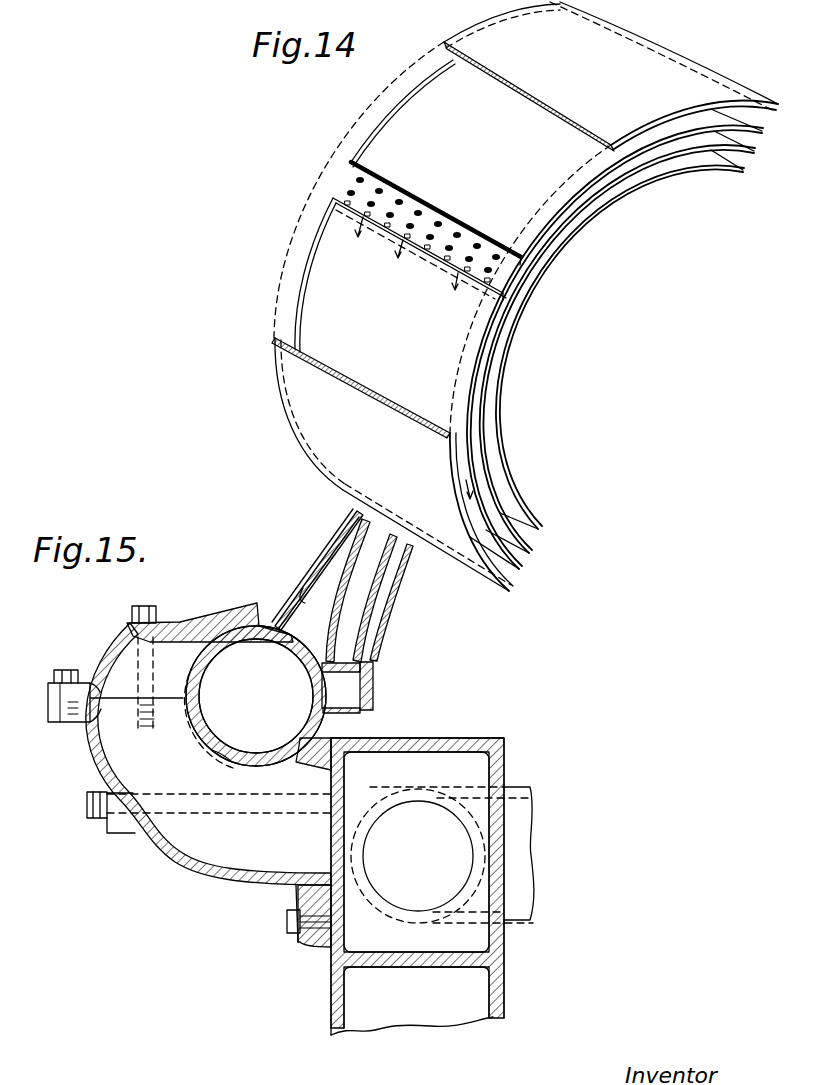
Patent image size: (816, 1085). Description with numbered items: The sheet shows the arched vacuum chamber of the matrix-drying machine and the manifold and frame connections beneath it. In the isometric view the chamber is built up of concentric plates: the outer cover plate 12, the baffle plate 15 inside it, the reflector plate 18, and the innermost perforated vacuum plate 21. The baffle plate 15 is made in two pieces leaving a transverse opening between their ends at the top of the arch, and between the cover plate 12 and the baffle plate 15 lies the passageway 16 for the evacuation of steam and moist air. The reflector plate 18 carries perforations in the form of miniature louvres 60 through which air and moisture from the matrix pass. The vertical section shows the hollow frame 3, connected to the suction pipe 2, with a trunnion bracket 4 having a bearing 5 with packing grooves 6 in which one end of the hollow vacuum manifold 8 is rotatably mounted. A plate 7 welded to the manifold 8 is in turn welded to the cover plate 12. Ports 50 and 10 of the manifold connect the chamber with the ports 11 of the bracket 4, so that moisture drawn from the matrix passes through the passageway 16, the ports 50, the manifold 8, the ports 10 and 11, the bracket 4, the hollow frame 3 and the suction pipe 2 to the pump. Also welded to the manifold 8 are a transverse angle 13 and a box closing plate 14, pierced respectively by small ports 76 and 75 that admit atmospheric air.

In FIG. 14, the cover plate 12 is at (473, 33).
In FIG. 15, the cover plate 12 is at (353, 527).
In FIG. 14, the baffle plate 15 is at (395, 115).
In FIG. 15, the baffle plate 15 is at (340, 605).
In FIG. 14, the passageway 16 is at (655, 133).
In FIG. 15, the passageway 16 is at (332, 583).
In FIG. 14, the reflector plate 18 is at (347, 192).
In FIG. 15, the reflector plate 18 is at (368, 600).
In FIG. 14, the perforated vacuum plate 21 is at (518, 337).
In FIG. 15, the perforated vacuum plate 21 is at (382, 632).
In FIG. 14, the miniature louvres 60 is at (482, 246).
In FIG. 15, the suction pipe 2 is at (522, 924).
In FIG. 15, the hollow frame 3 is at (422, 750).
In FIG. 15, the trunnion bracket 4 is at (152, 849).
In FIG. 15, the bearing 5 is at (268, 770).
In FIG. 15, the packing groove 6 is at (231, 765).
In FIG. 15, the plate 7 is at (305, 584).
In FIG. 15, the hollow vacuum manifold 8 is at (230, 750).
In FIG. 15, the port 10 is at (200, 667).
In FIG. 15, the port 11 is at (198, 850).
In FIG. 15, the transverse angle 13 is at (373, 662).
In FIG. 15, the box closing plate 14 is at (355, 714).
In FIG. 15, the port 50 is at (290, 645).
In FIG. 15, the port 75 is at (342, 713).
In FIG. 15, the port 76 is at (342, 663).